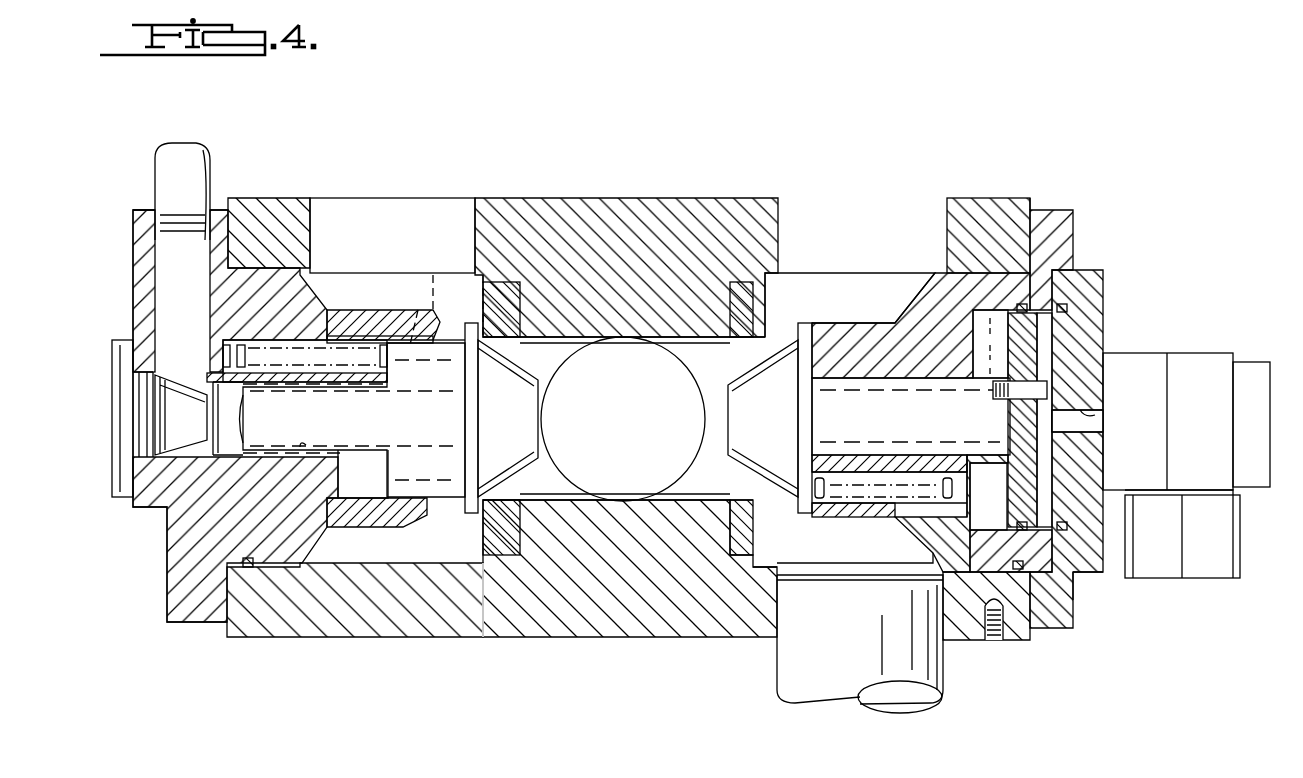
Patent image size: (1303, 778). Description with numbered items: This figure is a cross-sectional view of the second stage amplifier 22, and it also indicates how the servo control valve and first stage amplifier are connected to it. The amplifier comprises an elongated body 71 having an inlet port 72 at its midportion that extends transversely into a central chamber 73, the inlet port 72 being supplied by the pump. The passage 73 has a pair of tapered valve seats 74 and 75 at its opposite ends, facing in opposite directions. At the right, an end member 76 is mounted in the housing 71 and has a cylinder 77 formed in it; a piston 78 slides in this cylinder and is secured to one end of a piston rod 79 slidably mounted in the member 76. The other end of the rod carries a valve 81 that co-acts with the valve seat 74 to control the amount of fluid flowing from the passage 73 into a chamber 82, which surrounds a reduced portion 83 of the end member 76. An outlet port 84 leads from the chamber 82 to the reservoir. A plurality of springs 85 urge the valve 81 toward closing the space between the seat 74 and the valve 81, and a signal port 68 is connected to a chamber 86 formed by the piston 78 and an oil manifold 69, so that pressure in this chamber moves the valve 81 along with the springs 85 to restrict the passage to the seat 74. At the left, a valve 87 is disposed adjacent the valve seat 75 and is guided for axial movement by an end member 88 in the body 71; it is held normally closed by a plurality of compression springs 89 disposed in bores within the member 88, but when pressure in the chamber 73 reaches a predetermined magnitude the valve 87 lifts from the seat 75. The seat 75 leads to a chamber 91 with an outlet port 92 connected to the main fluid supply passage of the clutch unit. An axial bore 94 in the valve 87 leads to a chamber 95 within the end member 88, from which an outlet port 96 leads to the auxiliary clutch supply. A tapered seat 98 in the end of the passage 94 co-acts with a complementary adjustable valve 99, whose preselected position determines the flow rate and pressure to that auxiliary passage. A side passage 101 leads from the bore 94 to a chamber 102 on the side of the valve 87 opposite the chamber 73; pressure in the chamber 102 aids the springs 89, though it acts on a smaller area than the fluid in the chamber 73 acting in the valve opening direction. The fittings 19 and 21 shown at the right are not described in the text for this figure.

The inlet fitting 19 is at (1199, 580).
The outlet fitting 21 is at (1215, 350).
The second stage amplifier 22 is at (596, 666).
The signal port 68 is at (1080, 417).
The oil manifold 69 is at (1096, 563).
The elongated body 71 is at (512, 626).
The inlet port 72 is at (588, 348).
The central chamber 73 is at (698, 340).
The tapered valve seat 74 is at (784, 290).
The tapered valve seat 75 is at (488, 338).
The end member 76 is at (970, 277).
The cylinder 77 is at (990, 318).
The piston 78 is at (1028, 352).
The piston rod 79 is at (883, 392).
The valve 81 is at (787, 347).
The chamber 82 is at (778, 547).
The reduced portion 83 is at (837, 330).
The outlet port 84 is at (930, 665).
The springs 85 is at (828, 500).
The chamber 86 is at (1045, 497).
The valve 87 is at (462, 513).
The end member 88 is at (382, 310).
The compression springs 89 is at (243, 340).
The chamber 91 is at (416, 557).
The outlet port 92 is at (438, 212).
The axial bore 94 is at (298, 457).
The chamber 95 is at (170, 465).
The outlet port 96 is at (168, 259).
The tapered seat 98 is at (210, 448).
The adjustable valve 99 is at (172, 400).
The side passage 101 is at (418, 312).
The chamber 102 is at (355, 337).